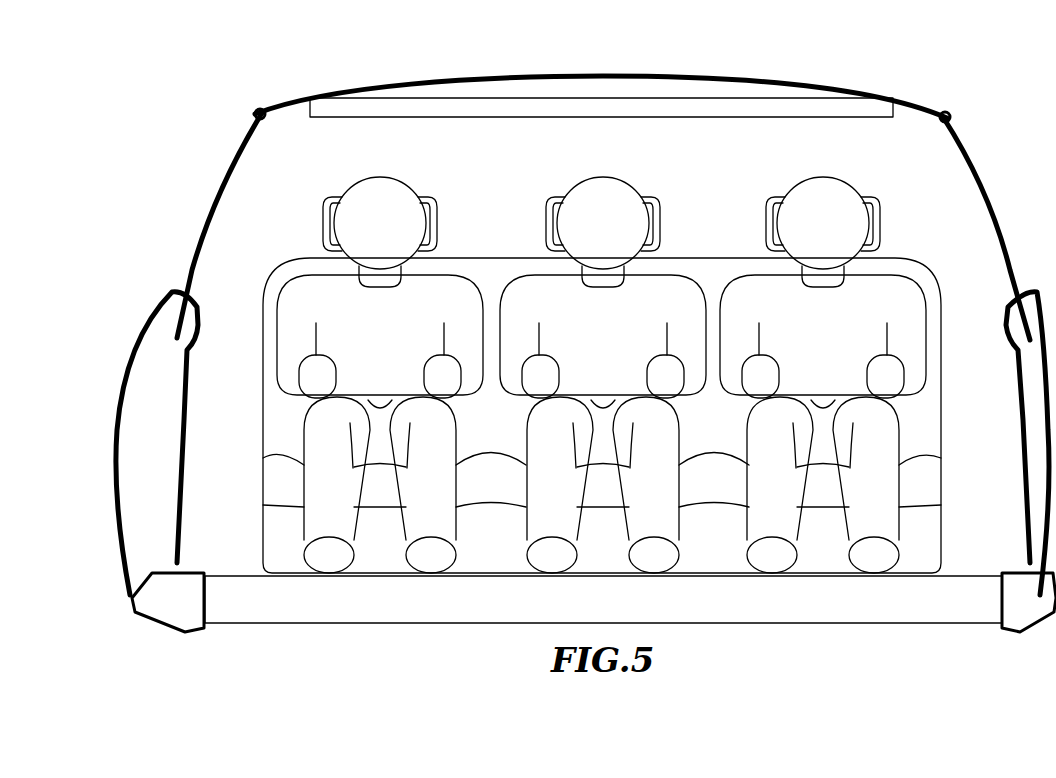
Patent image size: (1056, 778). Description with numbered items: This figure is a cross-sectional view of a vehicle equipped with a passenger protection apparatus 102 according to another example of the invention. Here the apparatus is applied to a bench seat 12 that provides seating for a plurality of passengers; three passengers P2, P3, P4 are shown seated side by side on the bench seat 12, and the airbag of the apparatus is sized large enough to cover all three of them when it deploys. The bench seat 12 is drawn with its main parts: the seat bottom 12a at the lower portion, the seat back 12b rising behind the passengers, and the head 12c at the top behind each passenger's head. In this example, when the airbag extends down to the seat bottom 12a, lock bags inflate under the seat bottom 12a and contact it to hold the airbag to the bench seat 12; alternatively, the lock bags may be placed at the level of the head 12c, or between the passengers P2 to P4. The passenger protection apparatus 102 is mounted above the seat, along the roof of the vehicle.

The passenger protection apparatus 102 is at (602, 108).
The bench seat 12 is at (218, 262).
The seat bottom 12a is at (283, 474).
The seat back 12b is at (270, 370).
The head 12c is at (322, 232).
The passenger P2 is at (412, 197).
The passenger P3 is at (633, 198).
The passenger P4 is at (855, 198).